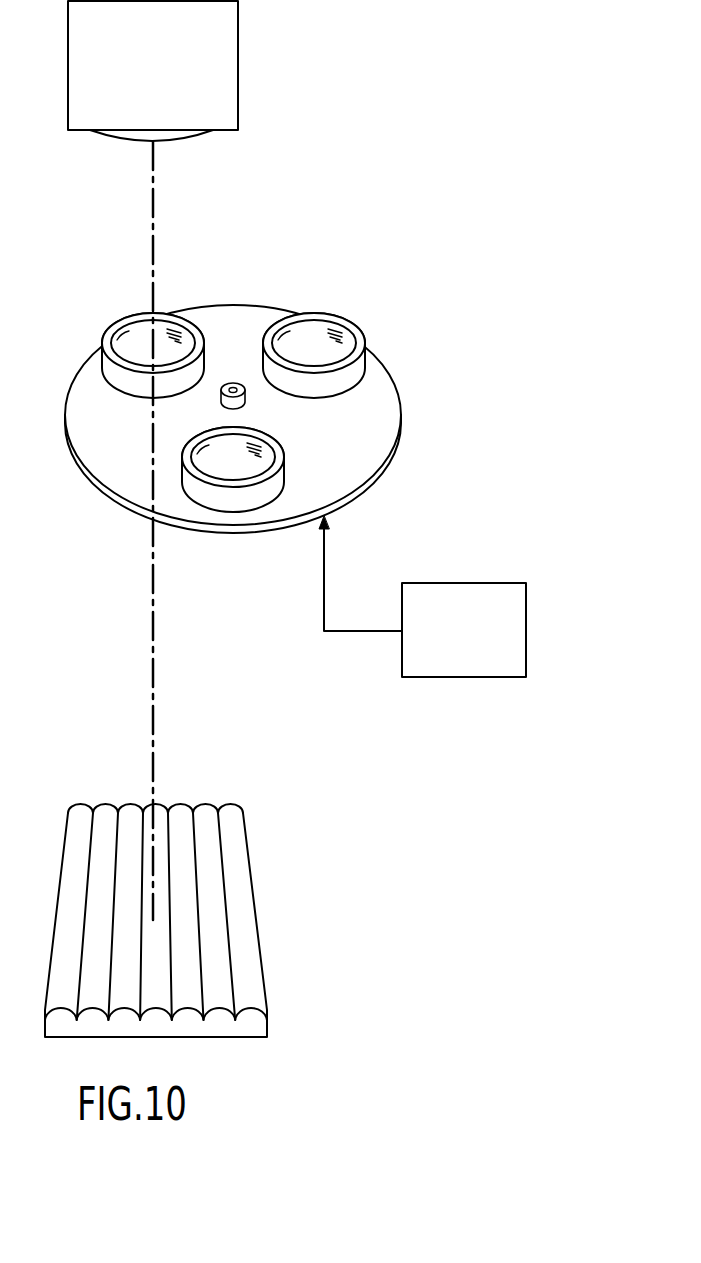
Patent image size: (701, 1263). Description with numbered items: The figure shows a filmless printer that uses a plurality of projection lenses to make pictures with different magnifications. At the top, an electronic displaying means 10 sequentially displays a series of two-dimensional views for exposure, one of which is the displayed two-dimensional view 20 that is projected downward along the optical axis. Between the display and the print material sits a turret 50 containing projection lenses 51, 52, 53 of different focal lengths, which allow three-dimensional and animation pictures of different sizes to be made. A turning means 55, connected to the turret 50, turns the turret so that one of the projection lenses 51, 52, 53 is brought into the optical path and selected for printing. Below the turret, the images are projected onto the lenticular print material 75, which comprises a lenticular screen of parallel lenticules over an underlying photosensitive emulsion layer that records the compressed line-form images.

The electronic displaying means 10 is at (228, 95).
The displayed 2D view 20 is at (190, 135).
The turret 50 is at (385, 415).
The projection lens 51 is at (116, 322).
The projection lens 52 is at (353, 323).
The projection lens 53 is at (252, 502).
The turning means 55 is at (492, 668).
The lenticular print material 75 is at (257, 1025).